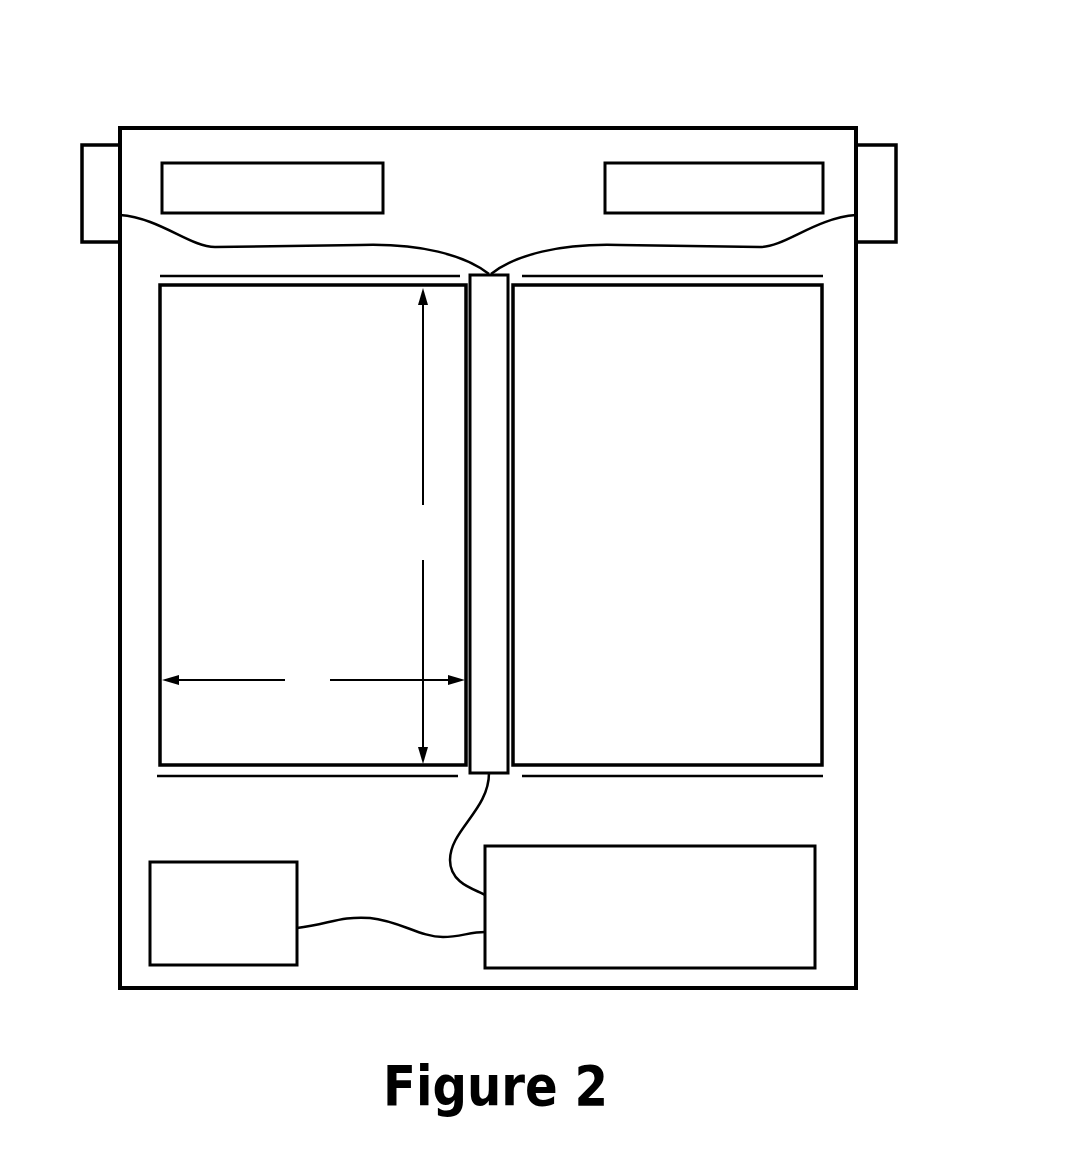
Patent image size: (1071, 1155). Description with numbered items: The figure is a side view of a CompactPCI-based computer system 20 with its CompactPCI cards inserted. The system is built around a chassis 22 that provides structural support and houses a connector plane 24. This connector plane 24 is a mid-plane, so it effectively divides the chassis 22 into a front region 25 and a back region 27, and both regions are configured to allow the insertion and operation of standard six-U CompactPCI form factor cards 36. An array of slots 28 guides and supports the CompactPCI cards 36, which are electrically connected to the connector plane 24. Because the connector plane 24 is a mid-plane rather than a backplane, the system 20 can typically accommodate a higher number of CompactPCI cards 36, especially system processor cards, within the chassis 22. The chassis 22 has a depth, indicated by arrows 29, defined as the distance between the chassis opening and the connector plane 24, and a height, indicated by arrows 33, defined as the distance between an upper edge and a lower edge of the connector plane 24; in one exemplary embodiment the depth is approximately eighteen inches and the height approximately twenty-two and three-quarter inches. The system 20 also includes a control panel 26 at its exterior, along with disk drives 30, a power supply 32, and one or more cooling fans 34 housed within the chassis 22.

The CompactPCI-based computer system 20 is at (704, 67).
The chassis 22 is at (838, 386).
The connector plane 24 is at (490, 555).
The front region 25 is at (119, 527).
The control panel 26 is at (90, 197).
The back region 27 is at (856, 577).
The array of slots 28 is at (203, 274).
The arrows indicating depth 29 is at (313, 680).
The disk drives 30 is at (246, 203).
The power supply 32 is at (628, 927).
The arrows indicating height 33 is at (422, 526).
The cooling fan 34 is at (200, 932).
The CompactPCI cards 36 is at (283, 542).